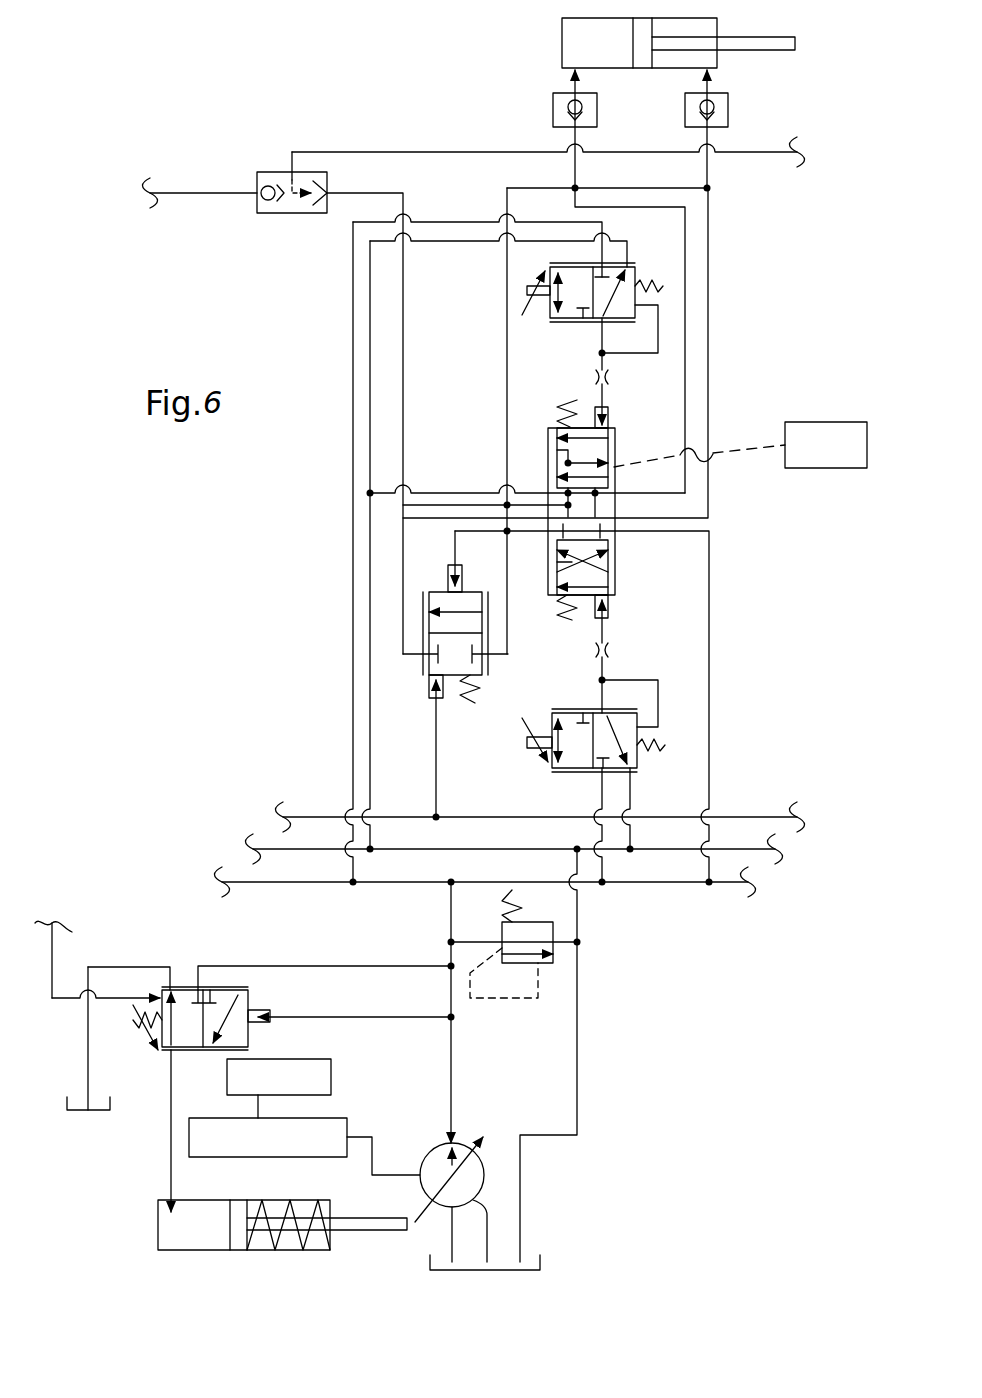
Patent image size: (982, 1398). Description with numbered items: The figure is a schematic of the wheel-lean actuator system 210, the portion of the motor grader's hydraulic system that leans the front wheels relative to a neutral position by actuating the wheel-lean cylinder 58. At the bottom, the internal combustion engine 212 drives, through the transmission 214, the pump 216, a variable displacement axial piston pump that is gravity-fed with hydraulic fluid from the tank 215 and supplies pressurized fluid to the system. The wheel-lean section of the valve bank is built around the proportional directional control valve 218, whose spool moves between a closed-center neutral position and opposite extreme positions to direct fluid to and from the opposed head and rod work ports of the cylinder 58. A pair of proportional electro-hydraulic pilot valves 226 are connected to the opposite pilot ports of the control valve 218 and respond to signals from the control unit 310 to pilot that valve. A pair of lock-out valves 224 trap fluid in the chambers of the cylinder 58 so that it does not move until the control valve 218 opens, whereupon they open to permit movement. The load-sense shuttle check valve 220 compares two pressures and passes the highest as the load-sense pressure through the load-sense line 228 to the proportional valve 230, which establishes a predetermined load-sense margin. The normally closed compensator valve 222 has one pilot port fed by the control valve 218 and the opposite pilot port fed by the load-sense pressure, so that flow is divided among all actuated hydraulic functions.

The wheel-lean actuator system 210 is at (270, 84).
The wheel-lean cylinder 58 is at (562, 31).
The lock-out valves 224 is at (553, 110).
The load-sense shuttle check valve 220 is at (270, 173).
The proportional electro-hydraulic pilot valves 226 is at (550, 317).
The proportional directional control valve 218 is at (614, 447).
The compensator valve 222 is at (429, 667).
The control unit 310 is at (822, 470).
The pump 216 is at (422, 1158).
The tank 215 is at (67, 1104).
The load-sense line 228 is at (52, 978).
The proportional valve 230 is at (248, 1000).
The internal combustion engine 212 is at (292, 1059).
The transmission 214 is at (335, 1118).